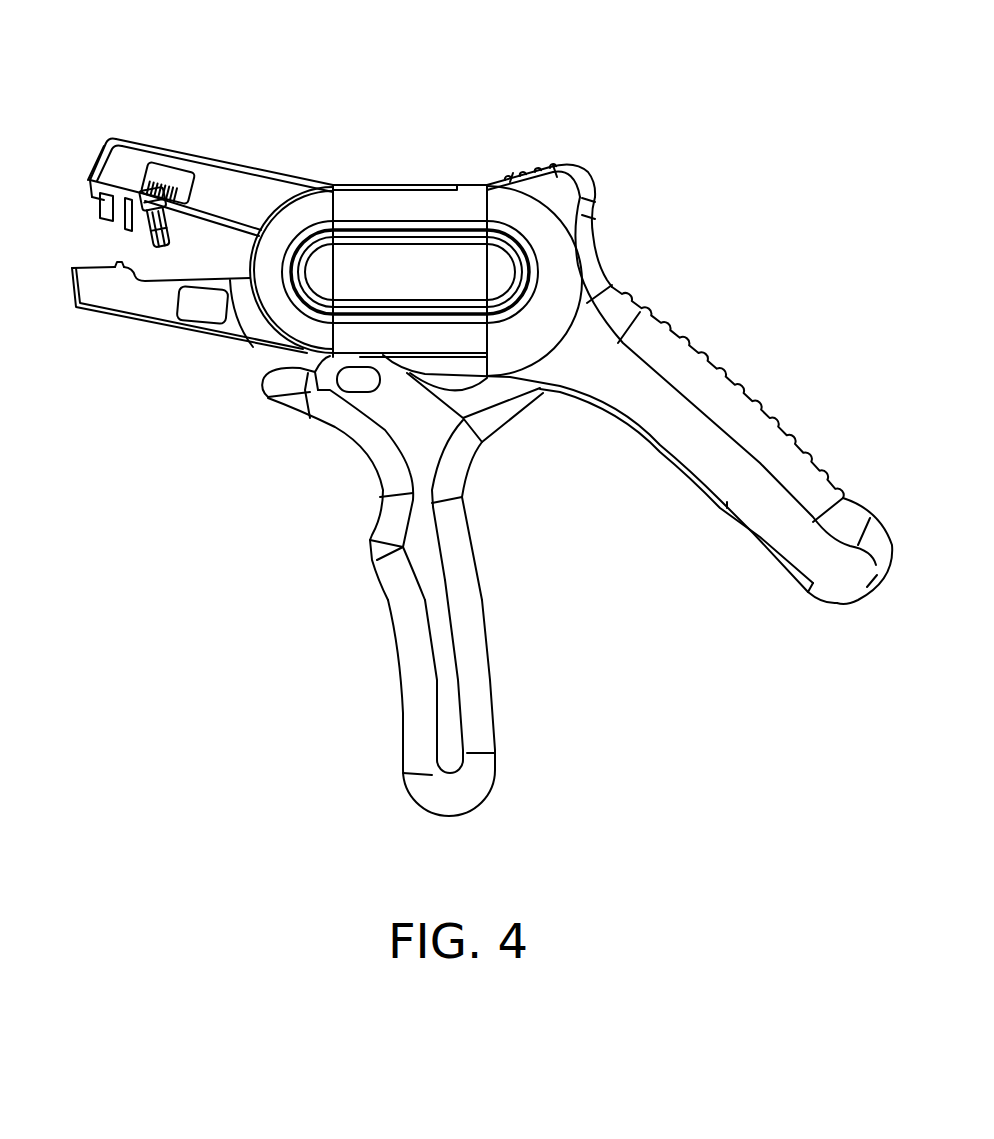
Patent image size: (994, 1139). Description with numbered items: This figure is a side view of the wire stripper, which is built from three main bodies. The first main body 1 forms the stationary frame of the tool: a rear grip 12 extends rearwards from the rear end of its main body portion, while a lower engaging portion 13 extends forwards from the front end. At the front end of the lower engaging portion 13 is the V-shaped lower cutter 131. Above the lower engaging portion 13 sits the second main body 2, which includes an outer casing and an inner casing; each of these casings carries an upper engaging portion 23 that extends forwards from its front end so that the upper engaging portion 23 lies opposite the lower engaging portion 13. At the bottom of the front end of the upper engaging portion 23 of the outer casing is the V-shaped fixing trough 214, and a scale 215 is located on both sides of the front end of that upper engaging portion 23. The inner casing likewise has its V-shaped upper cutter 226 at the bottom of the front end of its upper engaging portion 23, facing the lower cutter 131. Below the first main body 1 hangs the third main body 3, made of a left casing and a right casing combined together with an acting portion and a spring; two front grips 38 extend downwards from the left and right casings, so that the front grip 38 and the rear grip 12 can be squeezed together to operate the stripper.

The first main body 1 is at (571, 309).
The rear grip 12 is at (853, 518).
The lower engaging portion 13 is at (161, 323).
The lower cutter 131 is at (118, 263).
The second main body 2 is at (173, 130).
The fixing trough 214 is at (86, 190).
The scale 215 is at (172, 175).
The upper cutter 226 is at (128, 221).
The upper engaging portion 23 is at (248, 193).
The third main body 3 is at (355, 586).
The front grip 38 is at (418, 697).